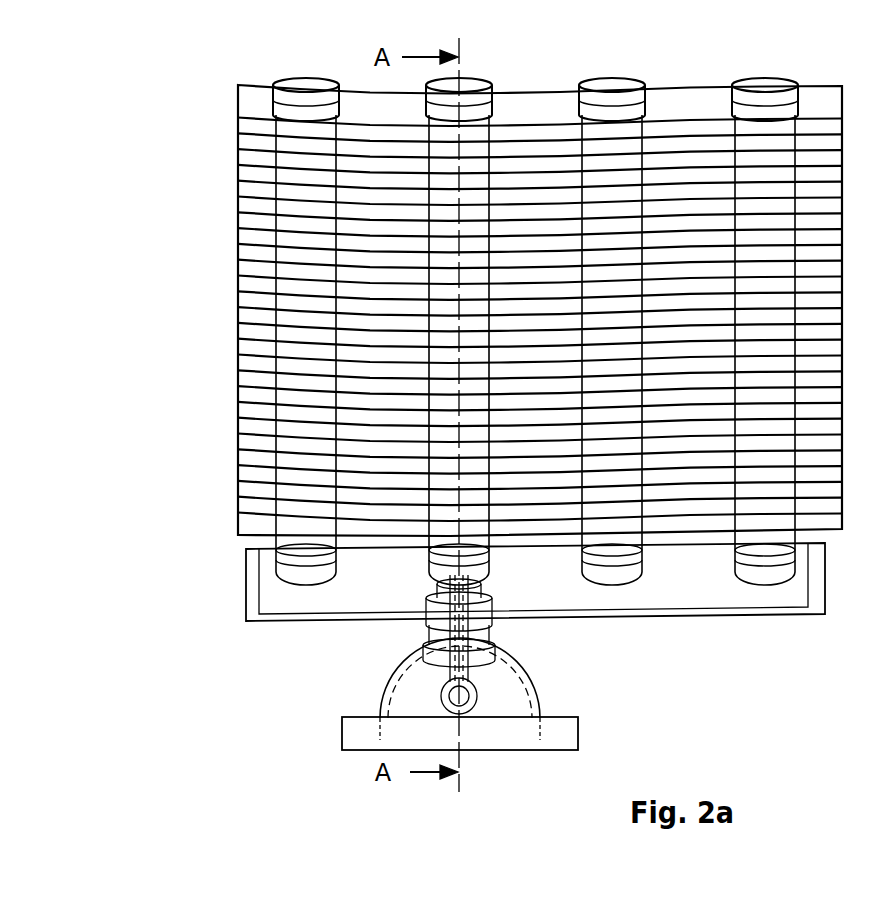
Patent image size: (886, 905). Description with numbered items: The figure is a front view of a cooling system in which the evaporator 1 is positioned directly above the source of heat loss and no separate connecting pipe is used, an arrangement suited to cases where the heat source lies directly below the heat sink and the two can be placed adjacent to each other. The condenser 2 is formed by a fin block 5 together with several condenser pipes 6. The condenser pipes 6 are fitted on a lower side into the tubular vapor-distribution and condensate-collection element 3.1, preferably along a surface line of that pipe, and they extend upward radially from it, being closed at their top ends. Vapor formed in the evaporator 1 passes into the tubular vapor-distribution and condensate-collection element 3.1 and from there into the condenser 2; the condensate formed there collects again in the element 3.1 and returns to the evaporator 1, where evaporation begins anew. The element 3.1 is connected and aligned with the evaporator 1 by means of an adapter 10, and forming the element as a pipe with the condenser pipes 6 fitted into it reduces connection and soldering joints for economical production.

The evaporator 1 is at (515, 692).
The condenser 2 is at (265, 168).
The tubular vapor-distribution and condensate-collection element 3.1 is at (722, 613).
The fin block 5 is at (247, 322).
The condenser pipes 6 is at (295, 87).
The adapter 10 is at (441, 624).